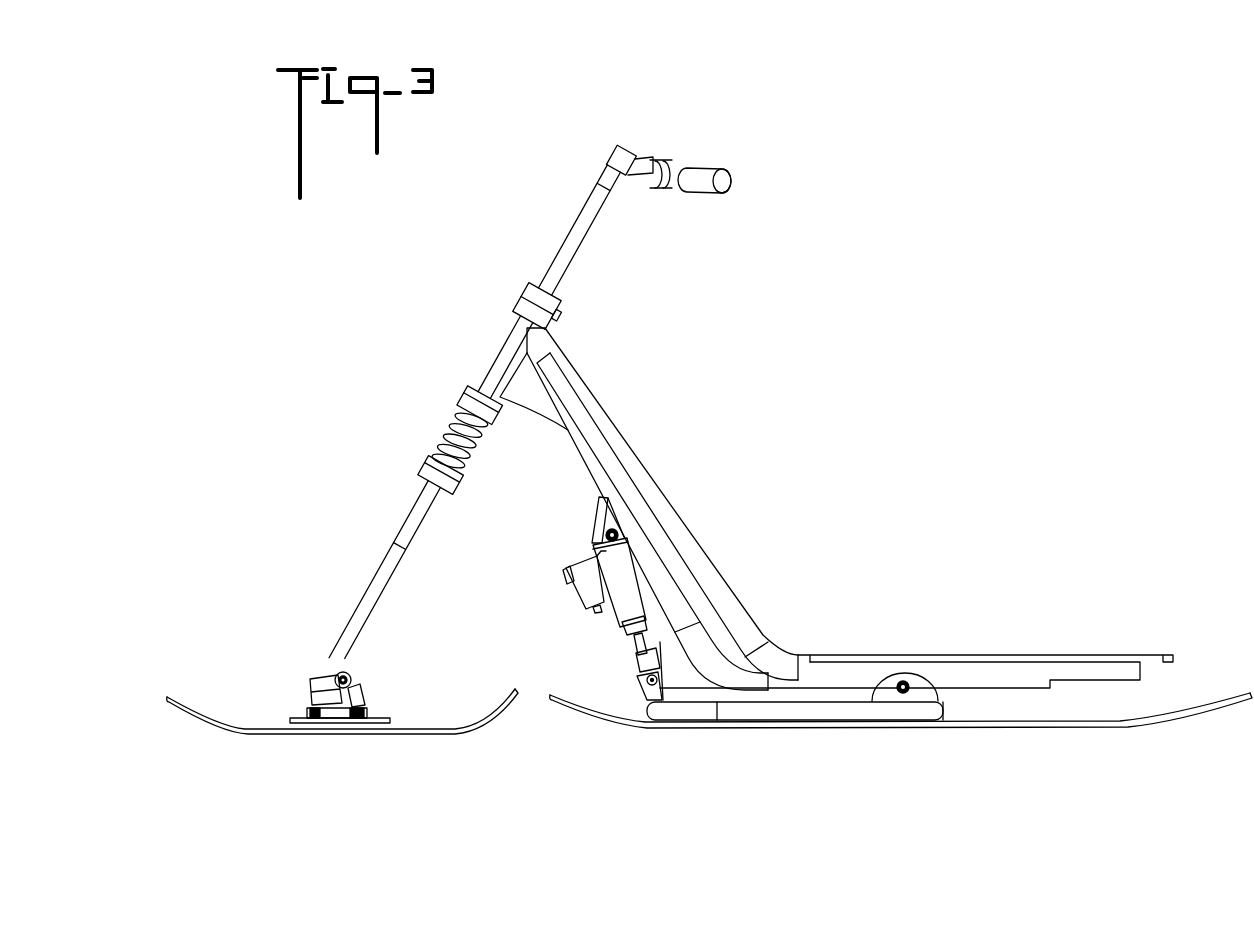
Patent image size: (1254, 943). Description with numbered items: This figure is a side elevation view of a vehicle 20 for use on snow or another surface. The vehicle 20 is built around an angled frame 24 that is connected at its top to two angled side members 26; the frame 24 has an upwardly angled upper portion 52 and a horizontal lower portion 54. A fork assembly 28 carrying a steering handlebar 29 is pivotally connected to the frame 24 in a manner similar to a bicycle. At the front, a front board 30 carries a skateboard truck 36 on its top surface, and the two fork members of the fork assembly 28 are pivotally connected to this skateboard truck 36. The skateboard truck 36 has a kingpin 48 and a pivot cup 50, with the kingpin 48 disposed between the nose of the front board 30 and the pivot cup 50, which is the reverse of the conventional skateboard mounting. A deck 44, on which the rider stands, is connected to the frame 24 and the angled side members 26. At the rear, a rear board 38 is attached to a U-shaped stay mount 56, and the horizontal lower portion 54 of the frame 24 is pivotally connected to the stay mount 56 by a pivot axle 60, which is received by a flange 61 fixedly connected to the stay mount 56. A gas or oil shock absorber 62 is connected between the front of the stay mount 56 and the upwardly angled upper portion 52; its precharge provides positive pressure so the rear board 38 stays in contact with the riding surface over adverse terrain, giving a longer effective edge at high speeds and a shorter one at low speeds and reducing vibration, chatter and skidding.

The vehicle 20 is at (854, 215).
The angled frame 24 is at (712, 668).
The angled side members 26 is at (690, 558).
The fork assembly 28 is at (432, 442).
The steering handlebar 29 is at (656, 162).
The front board 30 is at (235, 711).
The skateboard truck 36 is at (366, 687).
The rear board 38 is at (1199, 696).
The deck 44 is at (993, 658).
The kingpin 48 is at (313, 689).
The pivot cup 50 is at (367, 706).
The upwardly angled upper portion 52 is at (612, 486).
The horizontal lower portion 54 is at (955, 685).
The U-shaped stay mount 56 is at (790, 710).
The pivot axle 60 is at (904, 695).
The flange 61 is at (883, 690).
The shock absorber 62 is at (630, 593).